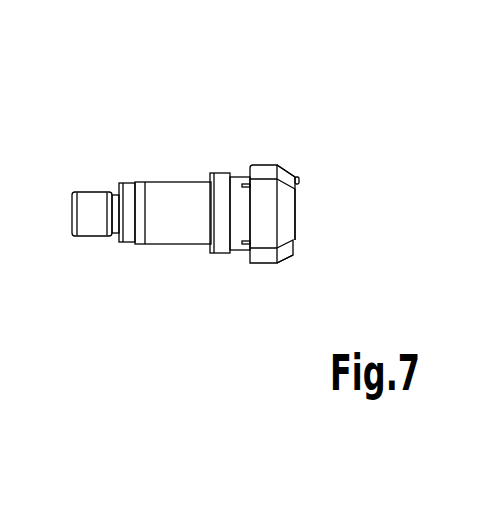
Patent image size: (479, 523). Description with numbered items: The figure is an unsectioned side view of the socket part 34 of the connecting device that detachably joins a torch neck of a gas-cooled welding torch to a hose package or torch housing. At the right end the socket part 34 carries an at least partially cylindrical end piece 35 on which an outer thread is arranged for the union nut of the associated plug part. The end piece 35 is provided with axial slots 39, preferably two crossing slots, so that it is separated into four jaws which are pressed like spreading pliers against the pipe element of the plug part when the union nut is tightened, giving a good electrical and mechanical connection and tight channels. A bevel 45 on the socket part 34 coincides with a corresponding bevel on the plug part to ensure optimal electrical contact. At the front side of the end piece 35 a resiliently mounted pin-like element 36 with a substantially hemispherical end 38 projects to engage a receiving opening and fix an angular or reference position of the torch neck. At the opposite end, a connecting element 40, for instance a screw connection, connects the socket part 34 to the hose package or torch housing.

The socket part 34 is at (183, 155).
The end piece 35 is at (263, 212).
The pin-like element 36 is at (297, 184).
The hemispherical end 38 is at (308, 180).
The axial slot 39 is at (263, 183).
The connecting element 40 is at (104, 176).
The bevel 45 is at (295, 161).